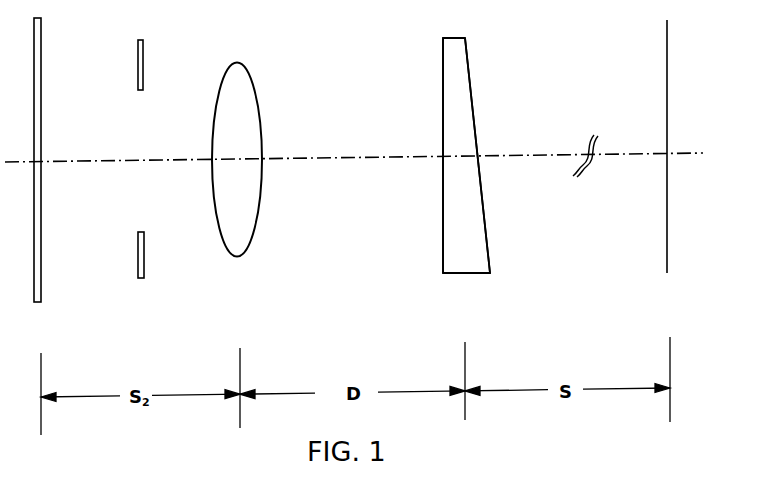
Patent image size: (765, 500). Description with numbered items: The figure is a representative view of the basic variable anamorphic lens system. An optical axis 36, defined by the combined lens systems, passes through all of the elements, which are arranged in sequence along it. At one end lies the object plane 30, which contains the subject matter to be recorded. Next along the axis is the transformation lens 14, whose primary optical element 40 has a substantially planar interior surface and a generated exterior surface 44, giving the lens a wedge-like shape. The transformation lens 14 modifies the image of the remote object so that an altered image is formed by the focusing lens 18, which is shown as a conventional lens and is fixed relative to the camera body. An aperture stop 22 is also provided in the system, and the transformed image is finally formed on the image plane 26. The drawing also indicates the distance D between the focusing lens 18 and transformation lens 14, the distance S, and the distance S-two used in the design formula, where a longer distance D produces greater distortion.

The transformation lens 14 is at (462, 155).
The focusing lens 18 is at (237, 160).
The aperture stop 22 is at (162, 71).
The image plane 26 is at (41, 161).
The object plane 30 is at (667, 230).
The optical axis 36 is at (513, 155).
The primary optical element 40 is at (443, 121).
The generated exterior surface 44 is at (471, 89).